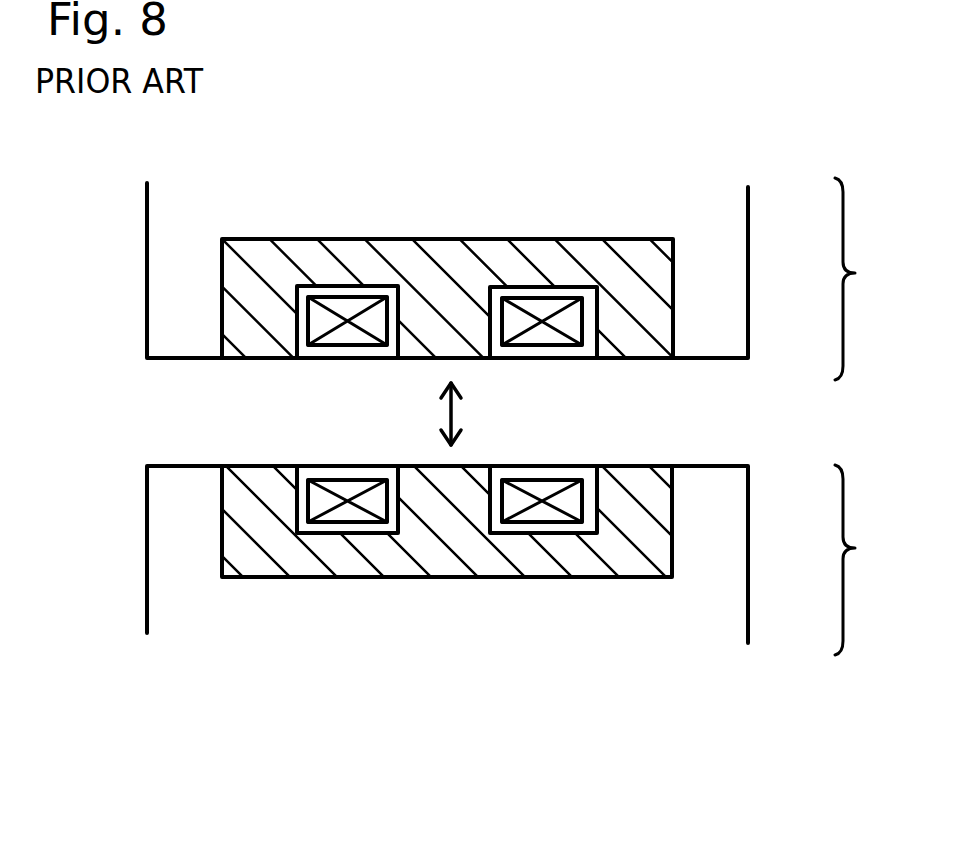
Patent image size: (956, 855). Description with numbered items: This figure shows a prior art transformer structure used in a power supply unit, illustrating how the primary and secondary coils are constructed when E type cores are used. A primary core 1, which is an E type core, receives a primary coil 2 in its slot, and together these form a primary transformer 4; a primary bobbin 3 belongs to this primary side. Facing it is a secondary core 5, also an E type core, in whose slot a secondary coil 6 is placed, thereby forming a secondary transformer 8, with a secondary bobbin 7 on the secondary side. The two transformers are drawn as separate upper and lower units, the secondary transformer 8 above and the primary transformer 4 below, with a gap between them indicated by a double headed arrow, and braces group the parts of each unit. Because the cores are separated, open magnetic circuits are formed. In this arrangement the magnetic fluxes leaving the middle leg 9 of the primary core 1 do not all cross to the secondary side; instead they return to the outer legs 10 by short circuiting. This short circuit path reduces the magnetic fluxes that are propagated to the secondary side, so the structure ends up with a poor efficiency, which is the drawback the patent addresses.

The primary core 1 is at (225, 537).
The primary coil 2 is at (543, 517).
The primary bobbin 3 is at (732, 542).
The primary transformer 4 is at (859, 560).
The secondary core 5 is at (228, 305).
The secondary coil 6 is at (543, 305).
The secondary bobbin 7 is at (730, 267).
The secondary transformer 8 is at (860, 279).
The middle leg 9 is at (420, 557).
The outer legs 10 is at (628, 533).